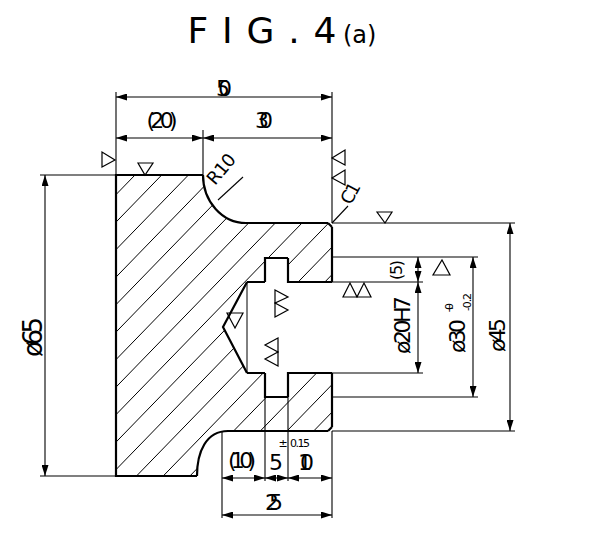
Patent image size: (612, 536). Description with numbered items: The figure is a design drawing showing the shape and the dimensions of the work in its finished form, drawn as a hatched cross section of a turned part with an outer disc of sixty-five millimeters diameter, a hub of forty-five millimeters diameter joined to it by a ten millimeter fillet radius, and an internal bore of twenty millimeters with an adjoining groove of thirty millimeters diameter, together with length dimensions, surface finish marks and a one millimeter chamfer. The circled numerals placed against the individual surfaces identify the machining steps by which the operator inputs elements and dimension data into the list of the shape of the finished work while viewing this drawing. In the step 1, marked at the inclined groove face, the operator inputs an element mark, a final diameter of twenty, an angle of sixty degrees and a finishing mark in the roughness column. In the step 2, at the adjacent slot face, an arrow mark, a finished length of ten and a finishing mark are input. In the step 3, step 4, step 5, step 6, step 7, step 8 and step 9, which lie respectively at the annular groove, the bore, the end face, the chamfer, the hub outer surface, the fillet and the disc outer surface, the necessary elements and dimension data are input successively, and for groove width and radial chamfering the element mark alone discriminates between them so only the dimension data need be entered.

The step 1 is at (240, 327).
The step 2 is at (257, 327).
The step 3 is at (276, 327).
The step 4 is at (310, 327).
The step 5 is at (345, 327).
The step 6 is at (358, 300).
The step 7 is at (278, 311).
The step 8 is at (235, 317).
The step 9 is at (159, 313).